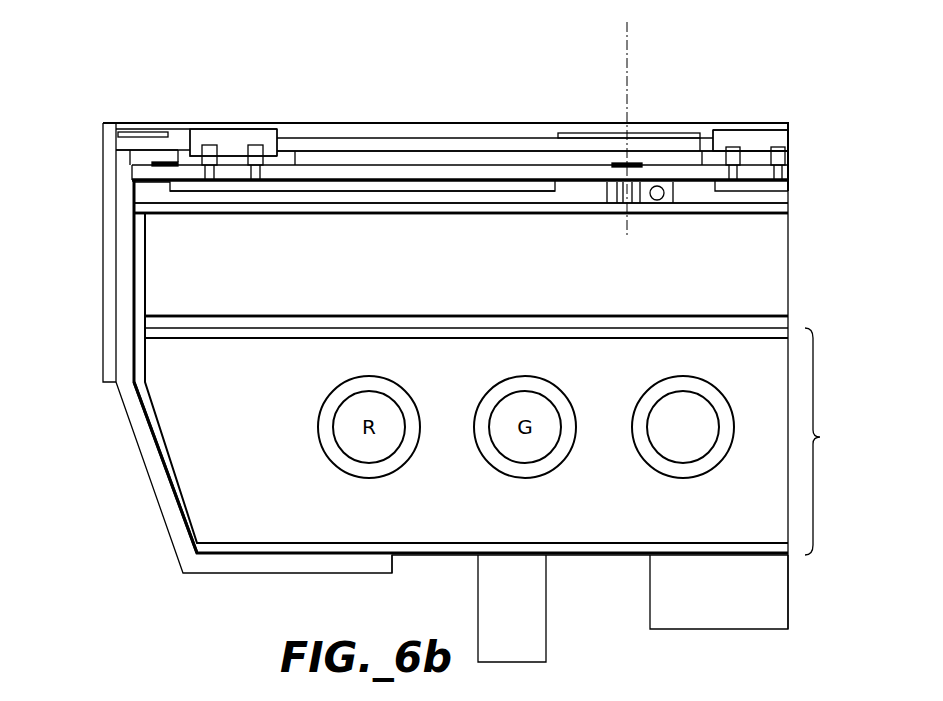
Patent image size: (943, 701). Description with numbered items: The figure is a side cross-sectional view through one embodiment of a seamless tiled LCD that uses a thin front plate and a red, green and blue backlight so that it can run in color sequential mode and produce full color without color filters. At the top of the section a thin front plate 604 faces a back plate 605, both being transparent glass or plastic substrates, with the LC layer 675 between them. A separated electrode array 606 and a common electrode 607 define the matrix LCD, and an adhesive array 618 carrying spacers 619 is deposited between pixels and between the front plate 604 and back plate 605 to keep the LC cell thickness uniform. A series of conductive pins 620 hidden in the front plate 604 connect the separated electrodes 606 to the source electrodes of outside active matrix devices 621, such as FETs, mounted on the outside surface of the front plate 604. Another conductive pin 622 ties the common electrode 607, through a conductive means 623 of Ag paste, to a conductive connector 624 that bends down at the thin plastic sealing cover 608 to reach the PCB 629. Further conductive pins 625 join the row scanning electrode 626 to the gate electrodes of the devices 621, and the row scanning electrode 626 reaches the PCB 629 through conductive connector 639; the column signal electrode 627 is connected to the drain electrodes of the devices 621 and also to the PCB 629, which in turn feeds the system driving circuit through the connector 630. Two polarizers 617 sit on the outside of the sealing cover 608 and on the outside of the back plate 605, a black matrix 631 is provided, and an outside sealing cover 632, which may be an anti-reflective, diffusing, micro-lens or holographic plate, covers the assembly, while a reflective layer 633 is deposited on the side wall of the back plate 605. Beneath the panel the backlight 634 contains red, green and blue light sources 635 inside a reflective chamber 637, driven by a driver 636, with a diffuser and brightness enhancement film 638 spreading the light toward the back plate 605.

The thin front plate 604 is at (133, 172).
The back plate 605 is at (165, 268).
The separated electrode array 606 is at (457, 192).
The common electrode 607 is at (350, 210).
The thin sealing cover 608 is at (122, 222).
The polarizers 617 is at (700, 150).
The adhesive array 618 is at (648, 182).
The spacer 619 is at (697, 145).
The conductive pins 620 is at (207, 145).
The outside active matrix device 621 is at (258, 135).
The conductive pin 622 is at (625, 100).
The conductive means 623 is at (615, 195).
The conductive connector 624 is at (620, 160).
The conductive pins 625 is at (252, 147).
The row scanning electrode 626 is at (418, 190).
The column signal electrode 627 is at (160, 160).
The PCB 629 is at (400, 557).
The connector 630 is at (522, 612).
The black matrix 631 is at (659, 185).
The outside sealing cover 632 is at (103, 127).
The reflective layer 633 is at (138, 307).
The backlight 634 is at (836, 441).
The R, G, B light sources 635 is at (690, 402).
The driver 636 is at (775, 597).
The reflective chamber 637 is at (197, 470).
The diffuser and brightness enhancement film 638 is at (780, 333).
The conductive connector 639 is at (137, 435).
The LC layer 675 is at (520, 195).